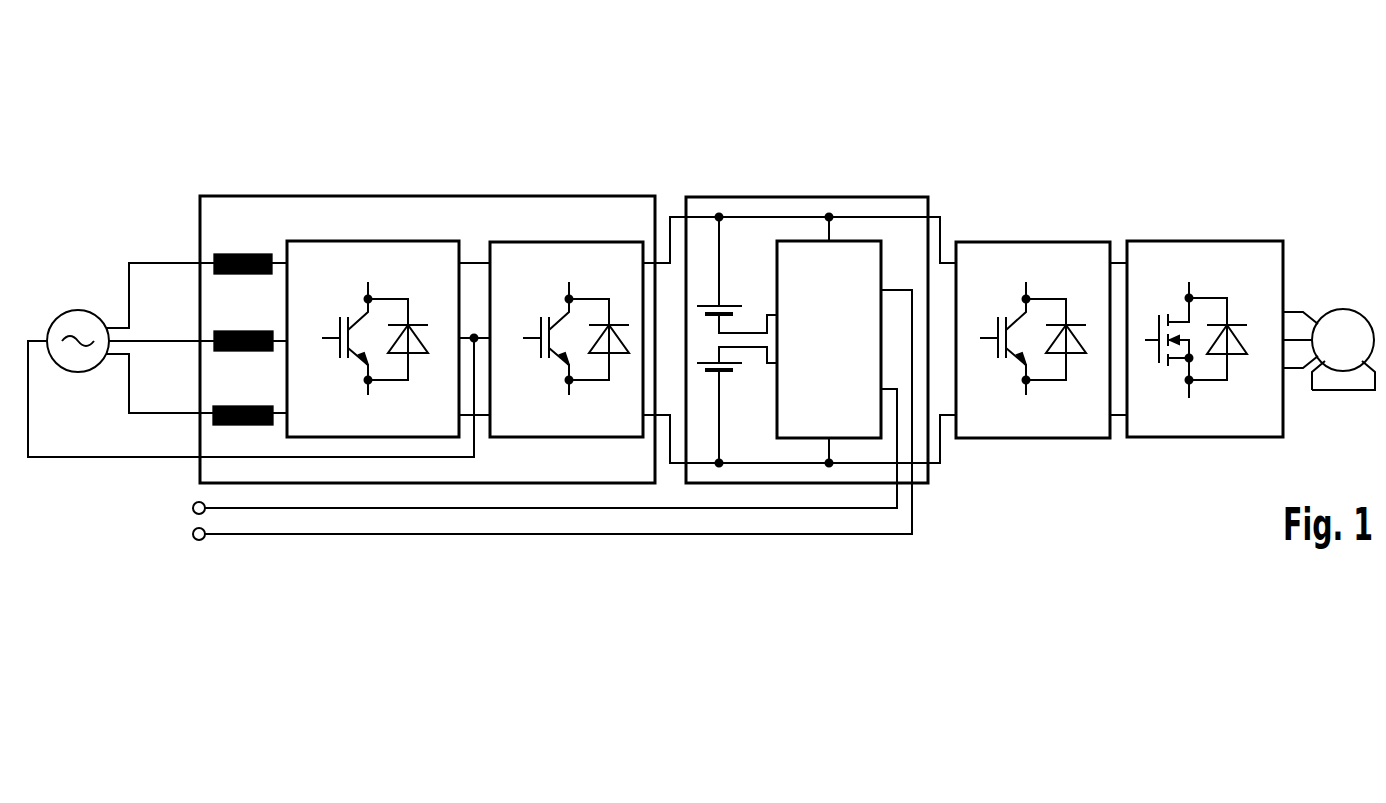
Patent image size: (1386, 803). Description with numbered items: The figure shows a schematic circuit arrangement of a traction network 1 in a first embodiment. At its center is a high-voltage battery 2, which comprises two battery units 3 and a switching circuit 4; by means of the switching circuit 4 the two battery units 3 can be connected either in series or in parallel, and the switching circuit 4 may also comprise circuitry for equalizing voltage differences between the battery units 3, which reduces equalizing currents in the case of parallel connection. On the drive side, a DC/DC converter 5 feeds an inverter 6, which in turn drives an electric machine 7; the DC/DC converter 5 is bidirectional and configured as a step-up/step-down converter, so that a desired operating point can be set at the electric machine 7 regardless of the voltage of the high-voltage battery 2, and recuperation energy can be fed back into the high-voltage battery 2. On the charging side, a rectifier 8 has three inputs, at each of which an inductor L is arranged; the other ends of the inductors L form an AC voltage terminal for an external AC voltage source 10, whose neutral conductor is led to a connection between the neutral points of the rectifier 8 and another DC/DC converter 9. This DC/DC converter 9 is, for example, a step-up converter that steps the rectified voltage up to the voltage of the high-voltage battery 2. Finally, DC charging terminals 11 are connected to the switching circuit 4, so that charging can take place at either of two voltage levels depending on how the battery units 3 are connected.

The traction network 1 is at (485, 119).
The high-voltage battery 2 is at (767, 197).
The battery unit 3 is at (731, 302).
The switching circuit 4 is at (860, 241).
The DC/DC converter 5 is at (1035, 242).
The inverter 6 is at (1208, 241).
The electric machine 7 is at (1343, 309).
The rectifier 8 is at (362, 240).
The DC/DC converter 9 is at (575, 242).
The AC voltage source 10 is at (77, 310).
The DC charging terminals 11 is at (192, 508).
The inductor L is at (237, 252).